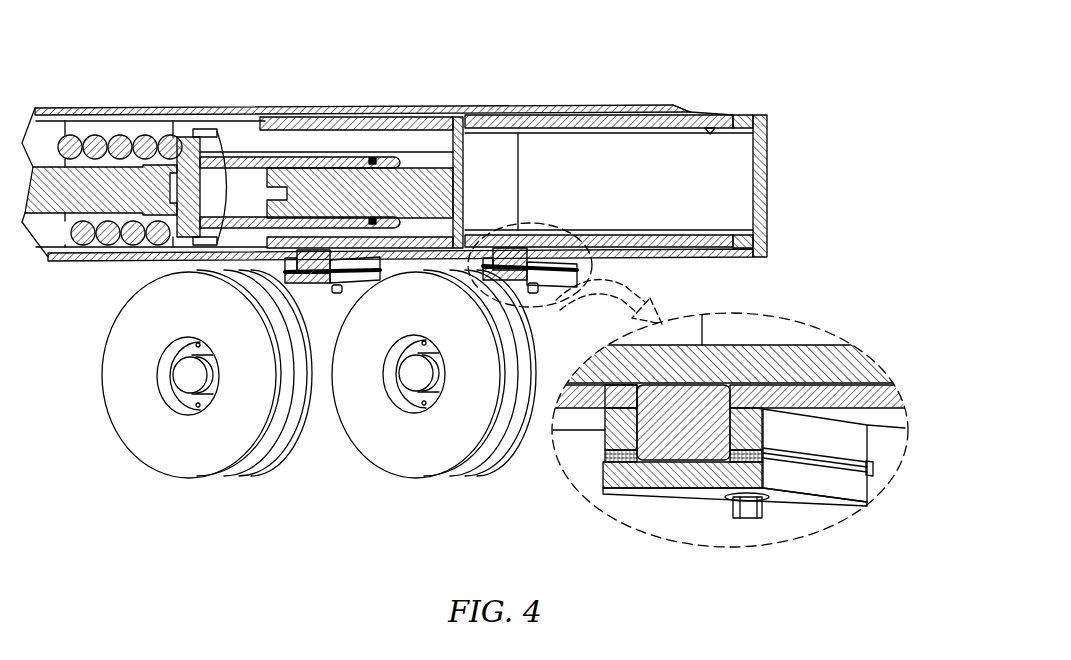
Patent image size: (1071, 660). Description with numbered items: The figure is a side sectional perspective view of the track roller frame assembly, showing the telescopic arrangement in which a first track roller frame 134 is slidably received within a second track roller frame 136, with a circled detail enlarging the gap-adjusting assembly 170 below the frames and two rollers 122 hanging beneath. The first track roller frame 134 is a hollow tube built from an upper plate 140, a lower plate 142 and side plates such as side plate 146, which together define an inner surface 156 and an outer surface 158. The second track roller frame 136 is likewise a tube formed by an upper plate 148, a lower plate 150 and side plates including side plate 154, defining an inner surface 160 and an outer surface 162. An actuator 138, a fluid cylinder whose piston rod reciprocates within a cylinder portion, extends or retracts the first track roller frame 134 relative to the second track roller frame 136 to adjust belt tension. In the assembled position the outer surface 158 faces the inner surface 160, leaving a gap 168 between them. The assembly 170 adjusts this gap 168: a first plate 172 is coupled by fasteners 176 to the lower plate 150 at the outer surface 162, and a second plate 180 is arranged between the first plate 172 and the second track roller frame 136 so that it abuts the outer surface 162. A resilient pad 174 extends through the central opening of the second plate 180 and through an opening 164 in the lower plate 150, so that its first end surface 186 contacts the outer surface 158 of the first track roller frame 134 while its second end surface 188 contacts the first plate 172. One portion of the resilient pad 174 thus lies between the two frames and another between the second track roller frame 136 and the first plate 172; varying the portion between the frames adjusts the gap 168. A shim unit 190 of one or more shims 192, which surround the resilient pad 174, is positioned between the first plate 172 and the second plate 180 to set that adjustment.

The rollers 122 is at (190, 456).
The first track roller frame 134 is at (746, 108).
The second track roller frame 136 is at (650, 100).
The actuator 138 is at (366, 116).
The upper plate 140 is at (614, 125).
The lower plate 142 is at (222, 280).
The side plate 146 is at (723, 192).
The upper plate 148 is at (680, 113).
The lower plate 150 is at (240, 290).
The side plate 154 is at (100, 128).
The inner surface 156 is at (697, 112).
The outer surface 158 is at (718, 112).
The inner surface 160 is at (228, 118).
The outer surface 162 is at (230, 285).
The opening 164 is at (643, 400).
The gap 168 is at (478, 110).
The assembly 170 is at (329, 318).
The first plate 172 is at (335, 286).
The resilient pad 174 is at (652, 470).
The fasteners 176 is at (762, 510).
The second plate 180 is at (735, 415).
The first end surface 186 is at (520, 233).
The second end surface 188 is at (677, 432).
The shim unit 190 is at (875, 470).
The shims 192 is at (607, 453).